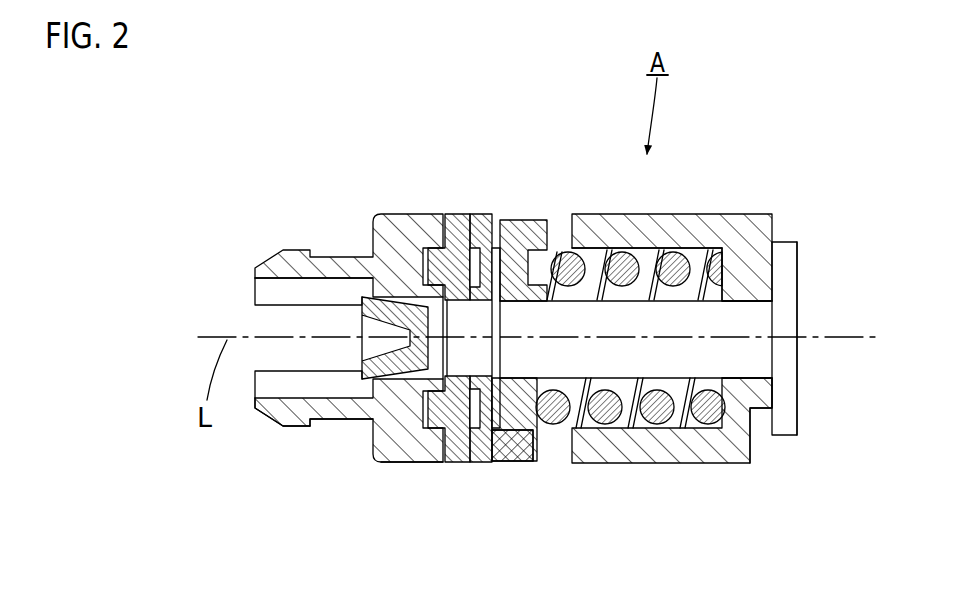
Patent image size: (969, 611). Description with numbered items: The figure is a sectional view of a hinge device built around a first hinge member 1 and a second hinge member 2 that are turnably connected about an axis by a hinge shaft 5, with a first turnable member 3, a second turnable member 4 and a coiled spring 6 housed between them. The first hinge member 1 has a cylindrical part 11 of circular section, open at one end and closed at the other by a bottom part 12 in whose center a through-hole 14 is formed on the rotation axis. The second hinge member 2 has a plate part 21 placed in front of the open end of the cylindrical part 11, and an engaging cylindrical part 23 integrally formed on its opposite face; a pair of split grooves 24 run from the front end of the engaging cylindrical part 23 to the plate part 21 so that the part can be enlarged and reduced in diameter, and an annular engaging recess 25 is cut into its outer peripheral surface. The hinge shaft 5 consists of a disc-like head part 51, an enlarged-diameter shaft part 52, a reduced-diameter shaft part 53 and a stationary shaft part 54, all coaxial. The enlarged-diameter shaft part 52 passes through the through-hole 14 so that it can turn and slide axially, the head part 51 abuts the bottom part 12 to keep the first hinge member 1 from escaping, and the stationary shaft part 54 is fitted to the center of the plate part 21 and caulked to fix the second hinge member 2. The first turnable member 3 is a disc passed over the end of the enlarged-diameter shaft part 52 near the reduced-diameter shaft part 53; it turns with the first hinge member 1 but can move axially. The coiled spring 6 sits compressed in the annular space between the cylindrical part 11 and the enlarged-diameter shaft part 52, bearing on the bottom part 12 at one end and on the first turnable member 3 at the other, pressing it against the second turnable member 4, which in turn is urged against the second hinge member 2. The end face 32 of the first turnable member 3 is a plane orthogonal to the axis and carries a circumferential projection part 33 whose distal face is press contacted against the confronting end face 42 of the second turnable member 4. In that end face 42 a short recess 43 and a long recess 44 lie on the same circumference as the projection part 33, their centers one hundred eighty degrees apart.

The first hinge member 1 is at (756, 209).
The second hinge member 2 is at (403, 204).
The first turnable member 3 is at (534, 206).
The second turnable member 4 is at (474, 204).
The hinge shaft 5 is at (804, 312).
The coiled spring 6 is at (659, 424).
The cylindrical part 11 is at (690, 220).
The bottom part 12 is at (765, 265).
The through-hole 14 is at (750, 377).
The plate part 21 is at (437, 463).
The engaging cylindrical part 23 is at (303, 428).
The split grooves 24 is at (283, 308).
The annular engaging recess 25 is at (341, 418).
The end face 32 is at (541, 458).
The projection part 33 is at (483, 213).
The end face 42 is at (515, 462).
The short recess 43 is at (468, 213).
The long recess 44 is at (491, 458).
The head part 51 is at (797, 355).
The enlarged-diameter shaft part 52 is at (688, 357).
The reduced-diameter shaft part 53 is at (460, 363).
The stationary shaft part 54 is at (396, 384).